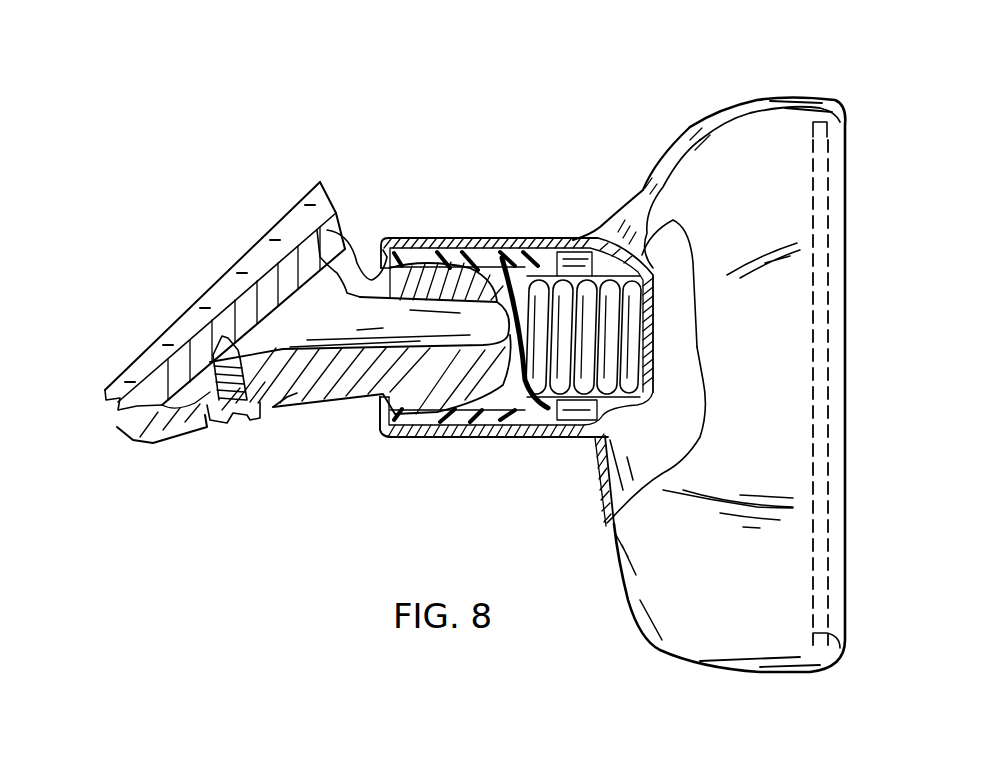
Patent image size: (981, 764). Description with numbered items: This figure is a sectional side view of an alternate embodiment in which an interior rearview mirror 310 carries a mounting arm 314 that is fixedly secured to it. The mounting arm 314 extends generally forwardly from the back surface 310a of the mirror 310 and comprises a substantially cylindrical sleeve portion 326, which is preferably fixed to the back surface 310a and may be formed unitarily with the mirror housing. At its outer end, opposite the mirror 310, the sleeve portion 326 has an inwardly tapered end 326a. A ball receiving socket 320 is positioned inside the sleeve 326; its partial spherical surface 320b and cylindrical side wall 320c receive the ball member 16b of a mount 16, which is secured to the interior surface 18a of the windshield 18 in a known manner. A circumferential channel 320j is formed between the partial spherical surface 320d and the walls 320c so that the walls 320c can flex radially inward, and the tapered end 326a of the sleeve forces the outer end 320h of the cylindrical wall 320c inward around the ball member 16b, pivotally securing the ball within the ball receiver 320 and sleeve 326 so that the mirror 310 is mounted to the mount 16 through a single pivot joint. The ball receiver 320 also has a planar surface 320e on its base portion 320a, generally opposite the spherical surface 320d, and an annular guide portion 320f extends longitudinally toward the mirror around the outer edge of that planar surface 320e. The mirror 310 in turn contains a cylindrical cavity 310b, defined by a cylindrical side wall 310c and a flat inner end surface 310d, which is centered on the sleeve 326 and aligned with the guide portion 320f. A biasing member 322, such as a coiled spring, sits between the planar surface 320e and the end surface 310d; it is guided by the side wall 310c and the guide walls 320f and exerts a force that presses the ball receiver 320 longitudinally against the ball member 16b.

The interior rearview mirror 310 is at (406, 79).
The back surface 310a is at (660, 152).
The cylindrical cavity 310b is at (625, 274).
The cylindrical side wall 310c is at (637, 260).
The planar end surface 310d is at (647, 368).
The mounting arm 314 is at (470, 172).
The mount 16 is at (308, 388).
The ball member 16b is at (413, 430).
The windshield 18 is at (262, 242).
The interior surface 18a is at (333, 207).
The ball receiving socket 320 is at (478, 437).
The base portion 320a is at (478, 437).
The partial spherical surface 320b is at (518, 440).
The cylindrical side wall 320c is at (453, 238).
The partial spherical surface 320d is at (345, 400).
The planar surface 320e is at (562, 440).
The annular guide portion 320f is at (545, 238).
The outer end 320h is at (382, 430).
The circumferential channel 320j is at (457, 437).
The biasing member 322 is at (580, 238).
The sleeve portion 326 is at (445, 238).
The tapered end 326a is at (388, 430).